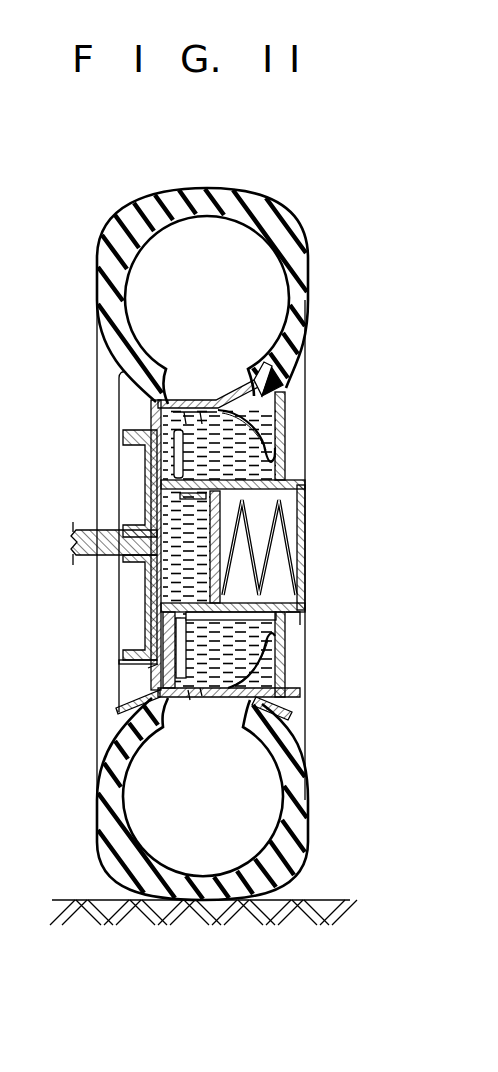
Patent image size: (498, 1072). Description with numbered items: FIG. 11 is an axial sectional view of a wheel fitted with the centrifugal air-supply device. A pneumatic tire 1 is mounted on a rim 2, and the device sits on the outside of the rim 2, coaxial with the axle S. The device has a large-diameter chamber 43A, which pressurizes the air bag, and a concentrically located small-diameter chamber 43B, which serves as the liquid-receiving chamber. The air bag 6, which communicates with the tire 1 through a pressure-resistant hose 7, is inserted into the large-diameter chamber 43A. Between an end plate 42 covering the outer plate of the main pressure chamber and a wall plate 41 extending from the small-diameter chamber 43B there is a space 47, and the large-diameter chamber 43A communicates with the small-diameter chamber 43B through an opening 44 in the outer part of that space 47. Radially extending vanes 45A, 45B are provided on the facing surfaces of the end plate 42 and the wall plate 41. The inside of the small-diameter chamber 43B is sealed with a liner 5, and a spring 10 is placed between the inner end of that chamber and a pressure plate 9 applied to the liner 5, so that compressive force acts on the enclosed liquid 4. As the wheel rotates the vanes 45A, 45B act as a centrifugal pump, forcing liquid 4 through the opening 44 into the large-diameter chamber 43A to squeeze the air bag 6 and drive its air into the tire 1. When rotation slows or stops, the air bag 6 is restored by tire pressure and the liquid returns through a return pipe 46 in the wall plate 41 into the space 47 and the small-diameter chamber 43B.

The pneumatic tire 1 is at (298, 240).
The rim 2 is at (219, 413).
The liquid 4 is at (196, 420).
The liner 5 is at (214, 588).
The air bag 6 is at (277, 450).
The pressure-resistant hose 7 is at (286, 372).
The pressure plate 9 is at (232, 512).
The spring 10 is at (298, 531).
The wall plate 41 is at (158, 631).
The end plate 42 is at (153, 503).
The large-diameter chamber 43A is at (284, 428).
The small-diameter chamber 43B is at (286, 628).
The opening 44 is at (158, 408).
The vanes 45A is at (152, 648).
The vanes 45B is at (152, 455).
The return pipe 46 is at (286, 618).
The space 47 is at (152, 666).
The axle S is at (114, 556).